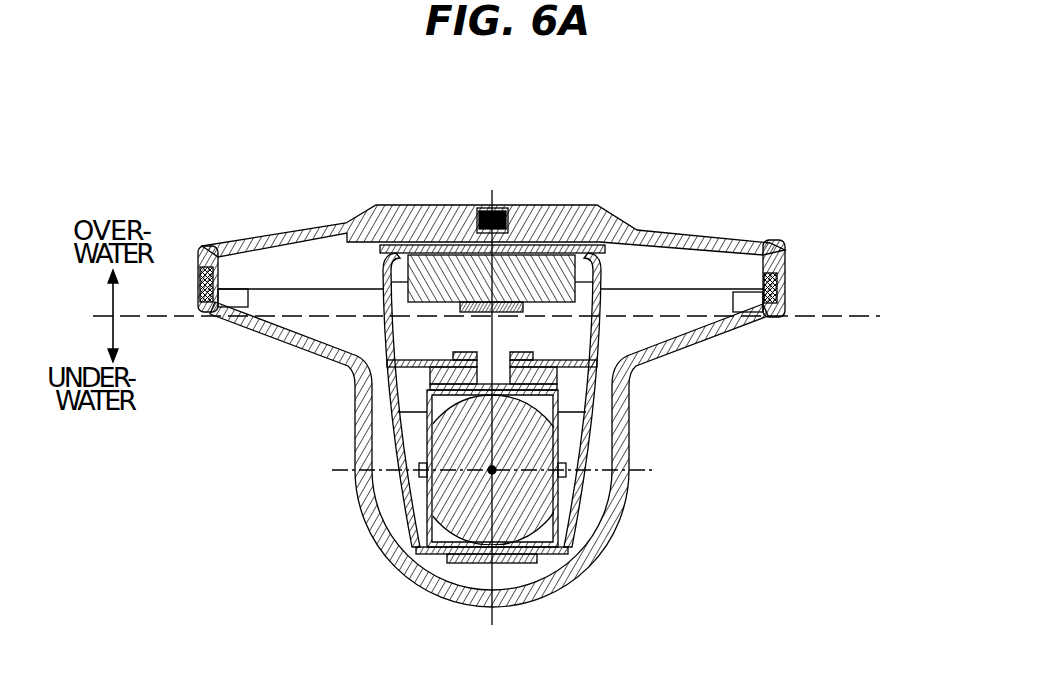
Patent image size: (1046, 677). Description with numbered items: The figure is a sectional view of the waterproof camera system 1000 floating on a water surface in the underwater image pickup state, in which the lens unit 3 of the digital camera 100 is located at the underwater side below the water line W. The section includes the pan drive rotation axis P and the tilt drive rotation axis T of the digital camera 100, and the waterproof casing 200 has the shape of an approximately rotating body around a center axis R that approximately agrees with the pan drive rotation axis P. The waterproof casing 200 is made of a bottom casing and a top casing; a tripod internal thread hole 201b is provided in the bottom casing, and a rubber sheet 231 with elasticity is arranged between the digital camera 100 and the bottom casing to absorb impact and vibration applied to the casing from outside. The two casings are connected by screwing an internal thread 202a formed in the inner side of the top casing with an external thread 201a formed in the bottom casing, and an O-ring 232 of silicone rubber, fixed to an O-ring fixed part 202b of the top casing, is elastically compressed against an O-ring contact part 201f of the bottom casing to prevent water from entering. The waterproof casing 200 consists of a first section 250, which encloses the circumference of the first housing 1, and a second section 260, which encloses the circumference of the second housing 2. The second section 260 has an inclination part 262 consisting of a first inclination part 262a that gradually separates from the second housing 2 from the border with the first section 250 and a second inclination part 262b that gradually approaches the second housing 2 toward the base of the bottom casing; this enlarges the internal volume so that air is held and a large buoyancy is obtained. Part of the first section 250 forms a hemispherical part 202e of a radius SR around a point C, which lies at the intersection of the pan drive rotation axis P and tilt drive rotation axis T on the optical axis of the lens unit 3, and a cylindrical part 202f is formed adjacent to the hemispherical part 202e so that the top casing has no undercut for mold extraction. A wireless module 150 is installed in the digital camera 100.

The waterproof camera system 1000 is at (280, 112).
The waterproof casing 200 is at (512, 372).
The rubber sheet 231 is at (556, 233).
The O-ring contact part 201f is at (204, 250).
The external thread 201a is at (770, 280).
The tripod internal thread hole 201b is at (480, 209).
The internal thread 202a is at (780, 284).
The O-ring fixed part 202b is at (211, 308).
The hemispherical part 202e is at (360, 522).
The cylindrical part 202f is at (353, 413).
The O-ring 232 is at (776, 320).
The inclination part 262 is at (453, 346).
The first inclination part 262a is at (303, 354).
The second inclination part 262b is at (272, 242).
The digital camera 100 is at (532, 372).
The wireless module 150 is at (480, 295).
The lens unit 3 is at (524, 507).
The second housing 2 is at (667, 248).
The first housing 1 is at (667, 367).
The second section 260 is at (862, 207).
The first section 250 is at (862, 370).
The point C is at (510, 492).
The center axis R is at (493, 392).
The pan drive rotation axis P is at (490, 627).
The tilt drive rotation axis T is at (483, 472).
The water line W is at (473, 318).
The radius SR is at (393, 572).